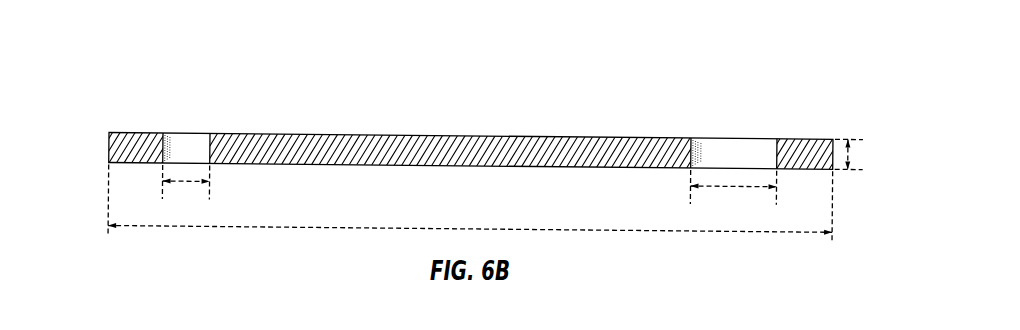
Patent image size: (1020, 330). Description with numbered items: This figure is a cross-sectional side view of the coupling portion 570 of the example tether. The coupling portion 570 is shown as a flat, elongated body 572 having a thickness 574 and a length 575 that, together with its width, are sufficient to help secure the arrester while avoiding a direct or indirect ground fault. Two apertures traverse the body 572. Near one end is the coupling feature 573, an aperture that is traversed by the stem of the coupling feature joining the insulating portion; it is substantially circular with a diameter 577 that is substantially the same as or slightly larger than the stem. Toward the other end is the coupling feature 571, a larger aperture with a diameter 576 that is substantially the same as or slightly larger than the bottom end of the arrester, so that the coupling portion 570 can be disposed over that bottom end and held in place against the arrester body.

The coupling portion 570 is at (438, 104).
The coupling feature 571 is at (733, 148).
The body 572 is at (497, 148).
The coupling feature 573 is at (187, 142).
The thickness 574 is at (857, 153).
The length 575 is at (470, 226).
The diameter 576 is at (714, 188).
The diameter 577 is at (188, 184).